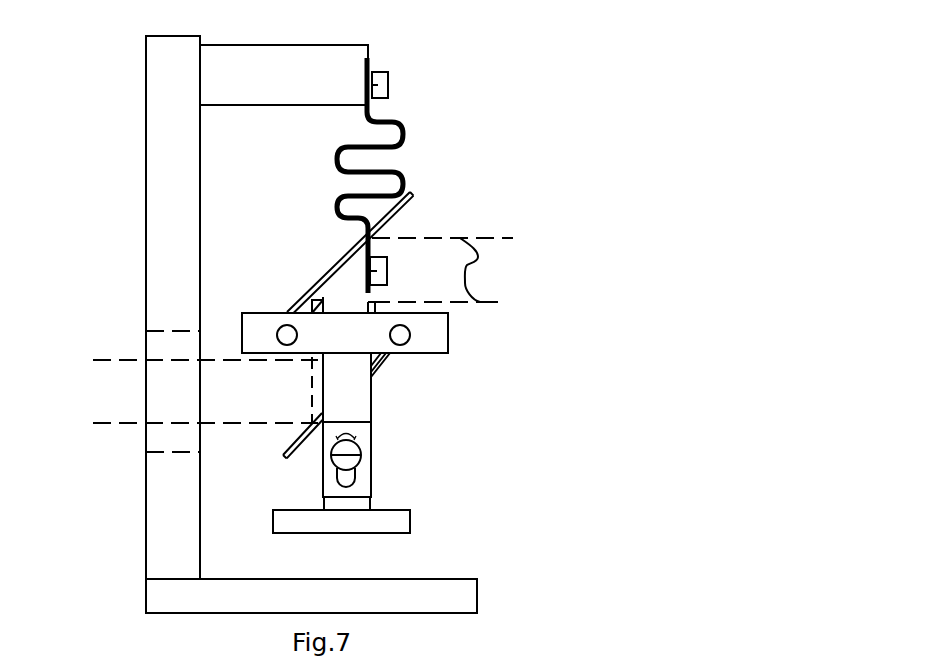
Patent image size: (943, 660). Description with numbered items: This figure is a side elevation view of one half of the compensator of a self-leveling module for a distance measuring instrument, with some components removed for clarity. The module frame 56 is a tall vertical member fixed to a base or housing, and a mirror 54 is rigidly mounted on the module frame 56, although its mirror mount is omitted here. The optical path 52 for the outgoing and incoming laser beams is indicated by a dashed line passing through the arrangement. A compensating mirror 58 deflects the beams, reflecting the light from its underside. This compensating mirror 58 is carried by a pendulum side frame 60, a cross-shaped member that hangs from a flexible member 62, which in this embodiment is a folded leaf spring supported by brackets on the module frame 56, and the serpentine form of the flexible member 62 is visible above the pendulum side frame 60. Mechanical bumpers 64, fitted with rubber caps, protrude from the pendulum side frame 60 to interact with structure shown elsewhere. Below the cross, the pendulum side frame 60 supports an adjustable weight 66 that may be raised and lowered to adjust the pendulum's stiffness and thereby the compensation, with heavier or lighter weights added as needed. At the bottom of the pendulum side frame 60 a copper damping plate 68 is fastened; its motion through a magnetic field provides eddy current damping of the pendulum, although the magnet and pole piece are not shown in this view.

The optical path 52 is at (467, 265).
The mirror 54 is at (282, 456).
The module frame 56 is at (146, 190).
The compensating mirror 58 is at (413, 193).
The pendulum side frame 60 is at (448, 335).
The flexible member 62 is at (403, 135).
The mechanical bumpers 64 is at (287, 324).
The adjustable weight 66 is at (347, 422).
The copper damping plate 68 is at (410, 512).